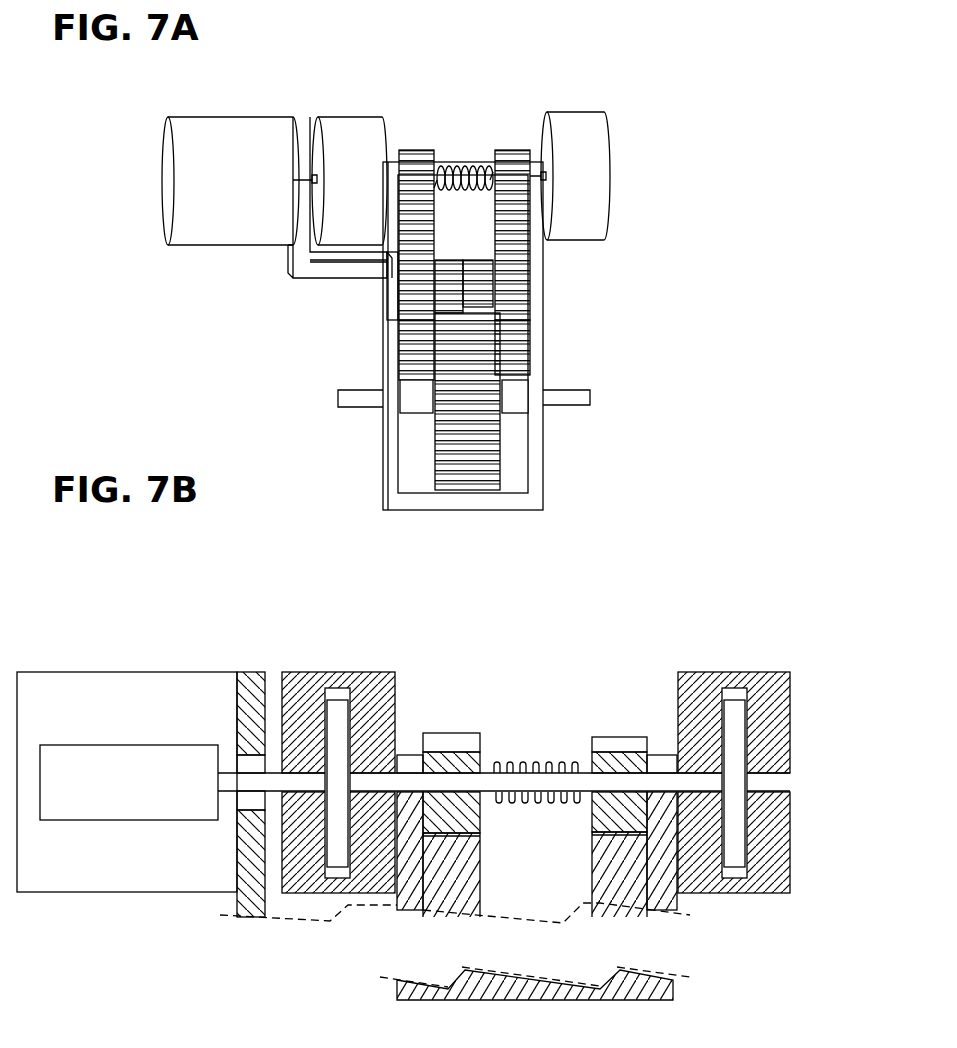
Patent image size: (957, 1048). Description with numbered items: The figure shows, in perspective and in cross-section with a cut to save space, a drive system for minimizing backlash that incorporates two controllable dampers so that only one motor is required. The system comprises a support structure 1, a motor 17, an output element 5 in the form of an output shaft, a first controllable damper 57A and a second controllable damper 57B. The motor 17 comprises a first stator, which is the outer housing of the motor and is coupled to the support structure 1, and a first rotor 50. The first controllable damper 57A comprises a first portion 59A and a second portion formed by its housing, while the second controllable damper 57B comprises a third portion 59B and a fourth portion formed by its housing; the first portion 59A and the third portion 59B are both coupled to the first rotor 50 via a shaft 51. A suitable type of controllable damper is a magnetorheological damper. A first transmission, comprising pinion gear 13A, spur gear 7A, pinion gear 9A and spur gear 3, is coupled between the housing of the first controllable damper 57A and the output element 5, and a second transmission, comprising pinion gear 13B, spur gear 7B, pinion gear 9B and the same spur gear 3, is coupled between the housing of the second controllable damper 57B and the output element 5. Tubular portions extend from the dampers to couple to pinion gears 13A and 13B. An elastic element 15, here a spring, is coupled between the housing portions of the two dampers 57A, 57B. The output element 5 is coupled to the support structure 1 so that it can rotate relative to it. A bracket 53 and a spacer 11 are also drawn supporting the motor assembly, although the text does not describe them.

In FIG. 7A, the support structure 1 is at (387, 458).
In FIG. 7B, the support structure 1 is at (408, 753).
In FIG. 7A, the spur gear 3 is at (502, 468).
In FIG. 7A, the output element 5 is at (338, 397).
In FIG. 7A, the spur gear 7A is at (402, 363).
In FIG. 7B, the spur gear 7A is at (480, 873).
In FIG. 7A, the spur gear 7B is at (522, 348).
In FIG. 7B, the spur gear 7B is at (592, 888).
In FIG. 7A, the pinion gear 9A is at (445, 260).
In FIG. 7A, the pinion gear 9B is at (493, 298).
In FIG. 7A, the spacer 11 is at (385, 293).
In FIG. 7A, the pinion gear 13A is at (430, 150).
In FIG. 7B, the pinion gear 13A is at (480, 735).
In FIG. 7A, the pinion gear 13B is at (512, 150).
In FIG. 7B, the pinion gear 13B is at (592, 737).
In FIG. 7A, the elastic element 15 is at (448, 165).
In FIG. 7B, the elastic element 15 is at (509, 760).
In FIG. 7A, the motor 17 is at (205, 117).
In FIG. 7B, the motor 17 is at (145, 672).
In FIG. 7B, the first rotor 50 is at (192, 745).
In FIG. 7B, the shaft 51 is at (228, 772).
In FIG. 7A, the motor bracket 53 is at (290, 273).
In FIG. 7A, the first controllable damper 57A is at (362, 117).
In FIG. 7B, the first controllable damper 57A is at (305, 673).
In FIG. 7A, the second controllable damper 57B is at (597, 113).
In FIG. 7B, the second controllable damper 57B is at (688, 672).
In FIG. 7B, the first portion 59A is at (350, 720).
In FIG. 7B, the third portion 59B is at (723, 720).